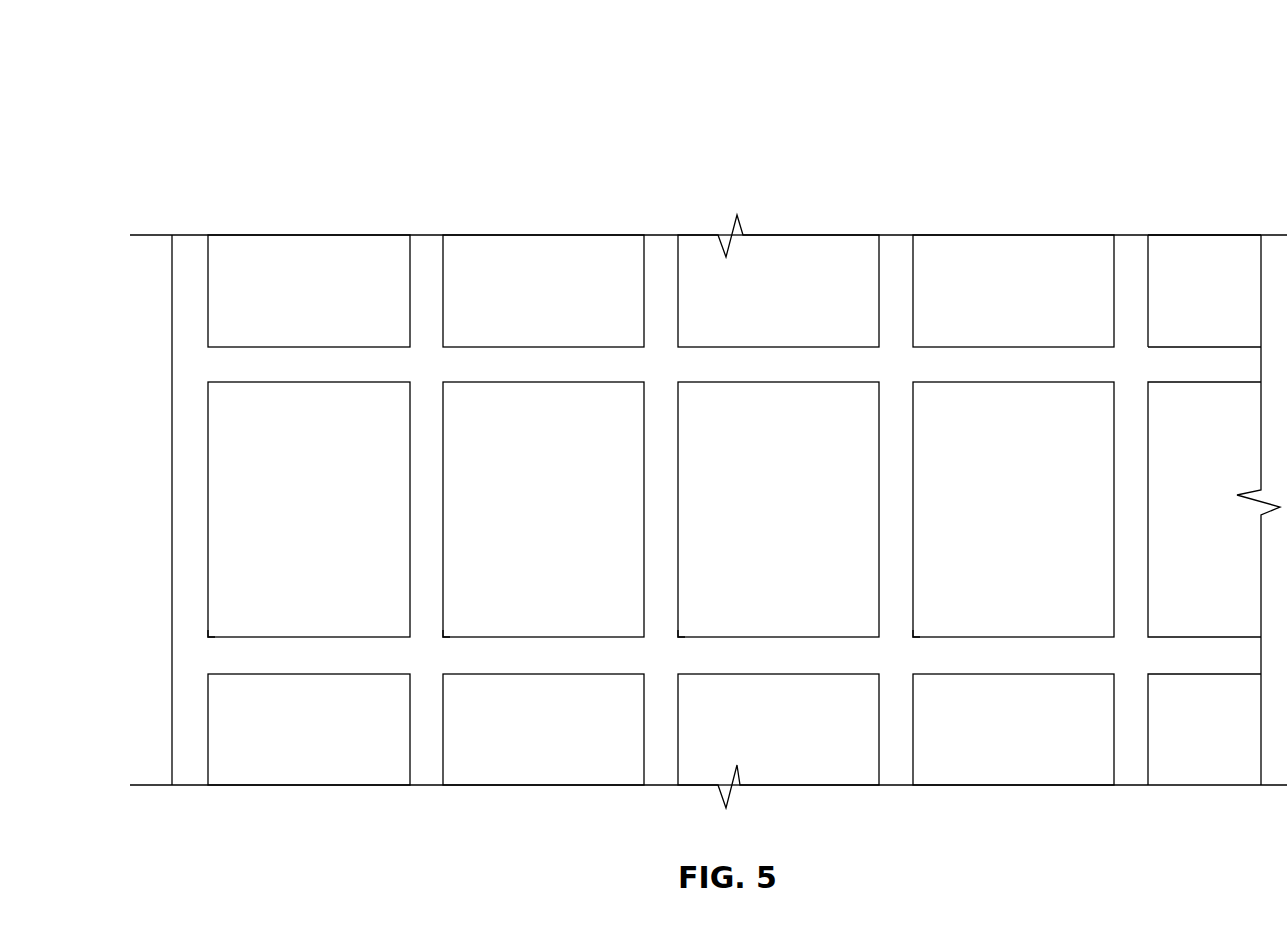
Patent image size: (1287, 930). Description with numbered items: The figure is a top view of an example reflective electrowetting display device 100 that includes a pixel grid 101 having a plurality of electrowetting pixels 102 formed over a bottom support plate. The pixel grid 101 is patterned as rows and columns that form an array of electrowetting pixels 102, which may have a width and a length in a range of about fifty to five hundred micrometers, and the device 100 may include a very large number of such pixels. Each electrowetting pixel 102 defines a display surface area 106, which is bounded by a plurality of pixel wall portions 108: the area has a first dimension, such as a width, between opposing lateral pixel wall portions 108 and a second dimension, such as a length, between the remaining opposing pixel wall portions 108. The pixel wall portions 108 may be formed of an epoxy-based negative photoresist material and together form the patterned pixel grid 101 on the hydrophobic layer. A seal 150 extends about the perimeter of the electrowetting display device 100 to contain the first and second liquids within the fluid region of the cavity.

The reflective electrowetting display device 100 is at (1011, 107).
The pixel grid 101 is at (767, 214).
The electrowetting pixel 102 is at (1232, 301).
The display surface area 106 is at (298, 620).
The pixel wall portions 108 is at (422, 247).
The seal 150 is at (192, 432).